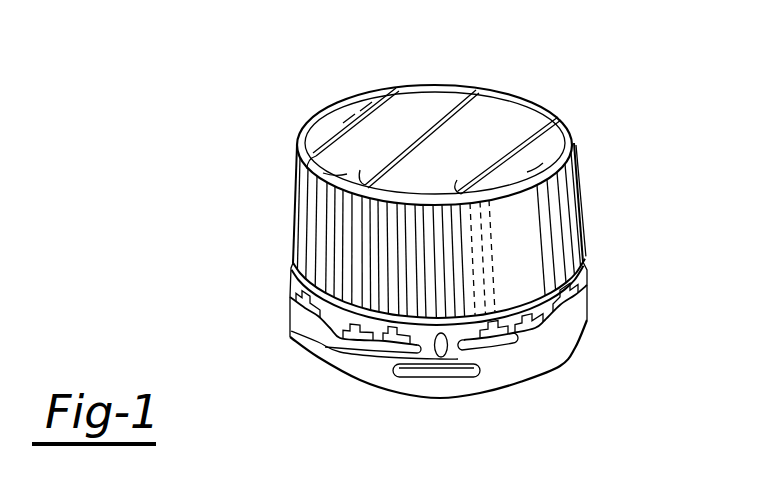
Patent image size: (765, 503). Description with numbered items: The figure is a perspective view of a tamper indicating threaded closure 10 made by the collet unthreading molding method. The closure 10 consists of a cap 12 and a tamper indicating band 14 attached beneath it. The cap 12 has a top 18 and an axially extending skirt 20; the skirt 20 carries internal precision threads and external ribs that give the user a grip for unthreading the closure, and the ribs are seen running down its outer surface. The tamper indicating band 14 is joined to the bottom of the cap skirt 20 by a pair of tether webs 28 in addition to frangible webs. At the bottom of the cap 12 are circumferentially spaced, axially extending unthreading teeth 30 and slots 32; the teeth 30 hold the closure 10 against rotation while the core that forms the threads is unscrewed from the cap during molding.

The threaded closure 10 is at (578, 167).
The cap 12 is at (580, 215).
The tamper indicating band 14 is at (588, 311).
The top 18 is at (488, 107).
The skirt 20 is at (291, 210).
The tether webs 28 is at (456, 344).
The unthreading teeth 30 is at (515, 338).
The slots 32 is at (563, 318).